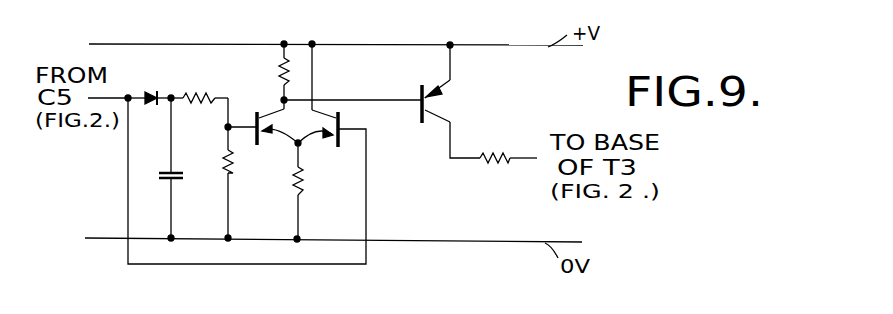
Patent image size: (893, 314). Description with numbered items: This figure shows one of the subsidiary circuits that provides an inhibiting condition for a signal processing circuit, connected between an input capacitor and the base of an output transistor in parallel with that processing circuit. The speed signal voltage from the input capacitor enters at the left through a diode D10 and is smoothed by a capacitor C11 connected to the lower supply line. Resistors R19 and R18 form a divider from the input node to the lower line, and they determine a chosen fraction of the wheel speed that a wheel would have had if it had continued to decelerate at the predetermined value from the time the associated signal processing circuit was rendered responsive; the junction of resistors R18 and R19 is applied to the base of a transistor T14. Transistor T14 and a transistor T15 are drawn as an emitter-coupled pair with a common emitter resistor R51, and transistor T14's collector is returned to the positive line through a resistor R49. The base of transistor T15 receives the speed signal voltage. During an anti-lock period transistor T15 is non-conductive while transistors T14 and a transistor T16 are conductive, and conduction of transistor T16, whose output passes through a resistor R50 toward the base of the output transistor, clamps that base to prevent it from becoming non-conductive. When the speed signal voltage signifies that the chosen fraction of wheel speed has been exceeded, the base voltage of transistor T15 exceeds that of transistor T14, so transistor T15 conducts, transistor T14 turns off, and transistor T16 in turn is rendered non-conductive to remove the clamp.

The diode D10 is at (155, 88).
The resistor R19 is at (200, 89).
The resistor R18 is at (222, 166).
The capacitor C11 is at (158, 175).
The resistor R49 is at (261, 71).
The resistor R51 is at (303, 180).
The transistor T14 is at (292, 148).
The transistor T15 is at (312, 146).
The transistor T16 is at (428, 102).
The resistor R50 is at (499, 149).